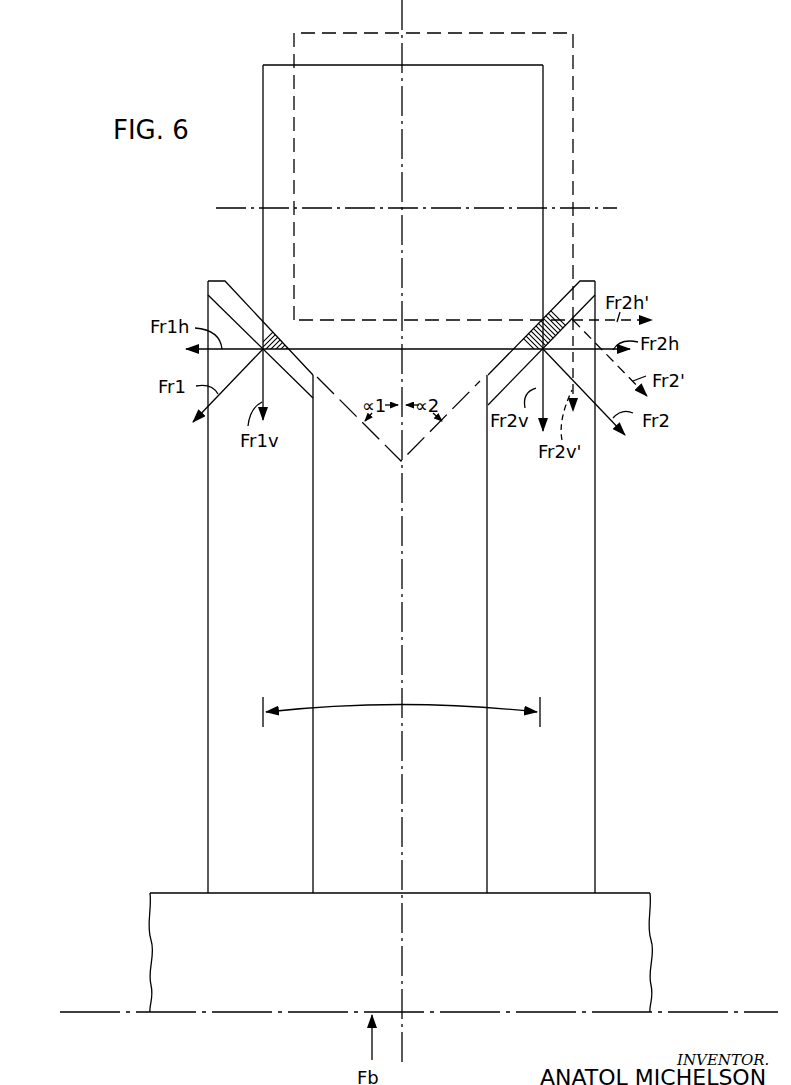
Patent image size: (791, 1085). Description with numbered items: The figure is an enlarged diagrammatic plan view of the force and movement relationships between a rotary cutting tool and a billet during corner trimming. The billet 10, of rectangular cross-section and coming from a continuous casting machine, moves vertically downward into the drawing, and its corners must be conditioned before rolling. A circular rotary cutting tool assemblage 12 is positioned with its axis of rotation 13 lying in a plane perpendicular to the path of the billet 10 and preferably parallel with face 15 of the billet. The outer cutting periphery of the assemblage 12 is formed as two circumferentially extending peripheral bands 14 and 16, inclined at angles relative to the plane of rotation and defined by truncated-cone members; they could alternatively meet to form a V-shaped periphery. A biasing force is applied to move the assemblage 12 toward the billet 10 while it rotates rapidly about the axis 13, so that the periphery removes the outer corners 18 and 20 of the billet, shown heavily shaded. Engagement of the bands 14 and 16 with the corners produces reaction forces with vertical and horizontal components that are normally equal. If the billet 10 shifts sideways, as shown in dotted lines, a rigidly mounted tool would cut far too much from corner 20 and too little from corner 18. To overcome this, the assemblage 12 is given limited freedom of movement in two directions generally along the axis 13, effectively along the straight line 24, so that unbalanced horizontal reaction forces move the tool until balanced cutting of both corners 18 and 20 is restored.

The billet 10 is at (543, 135).
The cutting tool assemblage 12 is at (618, 509).
The axis of rotation 13 is at (678, 1012).
The peripheral band 14 is at (507, 380).
The face of the billet 15 is at (359, 351).
The peripheral band 16 is at (296, 381).
The outer corner of the billet 18 is at (283, 345).
The outer corner of the billet 20 is at (522, 344).
The straight line of freedom of movement 24 is at (378, 712).